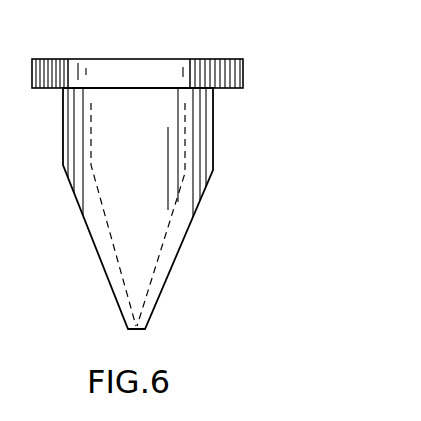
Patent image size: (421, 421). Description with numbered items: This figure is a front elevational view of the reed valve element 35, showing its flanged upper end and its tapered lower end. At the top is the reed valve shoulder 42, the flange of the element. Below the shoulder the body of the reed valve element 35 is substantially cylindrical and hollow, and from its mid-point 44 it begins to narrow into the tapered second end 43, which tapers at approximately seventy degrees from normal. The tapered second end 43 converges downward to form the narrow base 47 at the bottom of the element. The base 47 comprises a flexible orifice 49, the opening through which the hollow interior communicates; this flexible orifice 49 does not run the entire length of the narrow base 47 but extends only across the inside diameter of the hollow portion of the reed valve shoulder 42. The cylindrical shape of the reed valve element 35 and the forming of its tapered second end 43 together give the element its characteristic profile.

The reed valve element 35 is at (248, 50).
The reed valve shoulder 42 is at (243, 71).
The mid-point 44 is at (212, 171).
The tapered second end 43 is at (184, 236).
The base 47 is at (128, 330).
The flexible orifice 49 is at (143, 330).